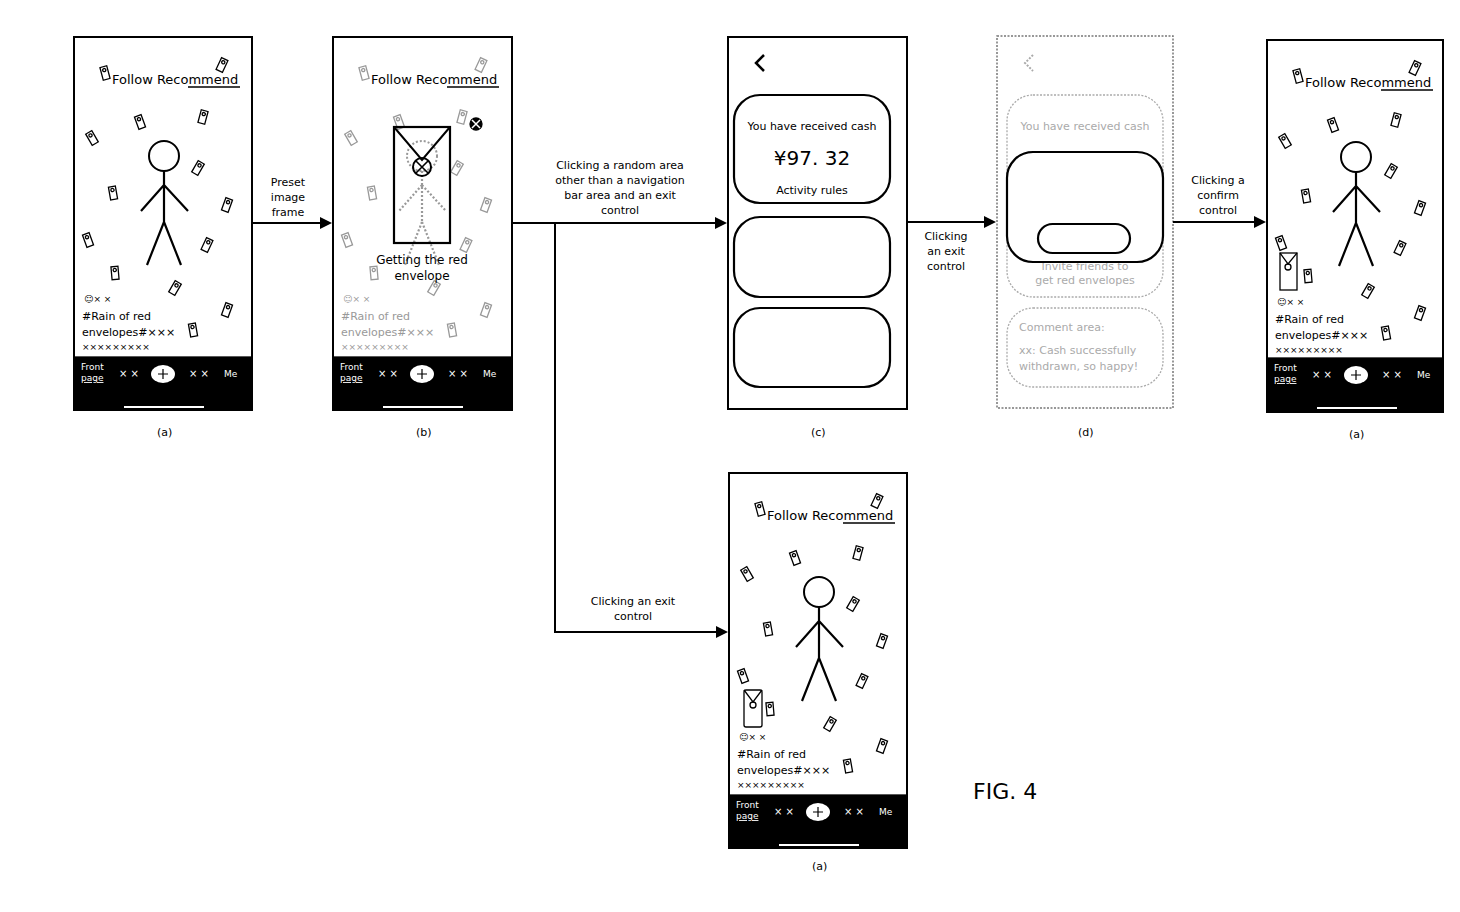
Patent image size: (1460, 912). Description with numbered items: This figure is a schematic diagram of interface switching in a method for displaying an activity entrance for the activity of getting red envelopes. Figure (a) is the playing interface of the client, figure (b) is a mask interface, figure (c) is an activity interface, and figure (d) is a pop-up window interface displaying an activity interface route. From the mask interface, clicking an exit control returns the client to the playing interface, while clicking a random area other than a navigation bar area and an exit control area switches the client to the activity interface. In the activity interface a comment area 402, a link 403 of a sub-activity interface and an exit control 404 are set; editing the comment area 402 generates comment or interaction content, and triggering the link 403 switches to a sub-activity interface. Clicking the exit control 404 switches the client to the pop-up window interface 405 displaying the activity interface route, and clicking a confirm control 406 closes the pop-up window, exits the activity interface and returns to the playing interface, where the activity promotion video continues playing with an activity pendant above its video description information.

The comment area 402 is at (737, 363).
The link of a sub-activity interface 403 is at (742, 287).
The exit control 404 is at (746, 61).
The pop-up window interface 405 is at (1020, 153).
The confirm control 406 is at (1037, 226).